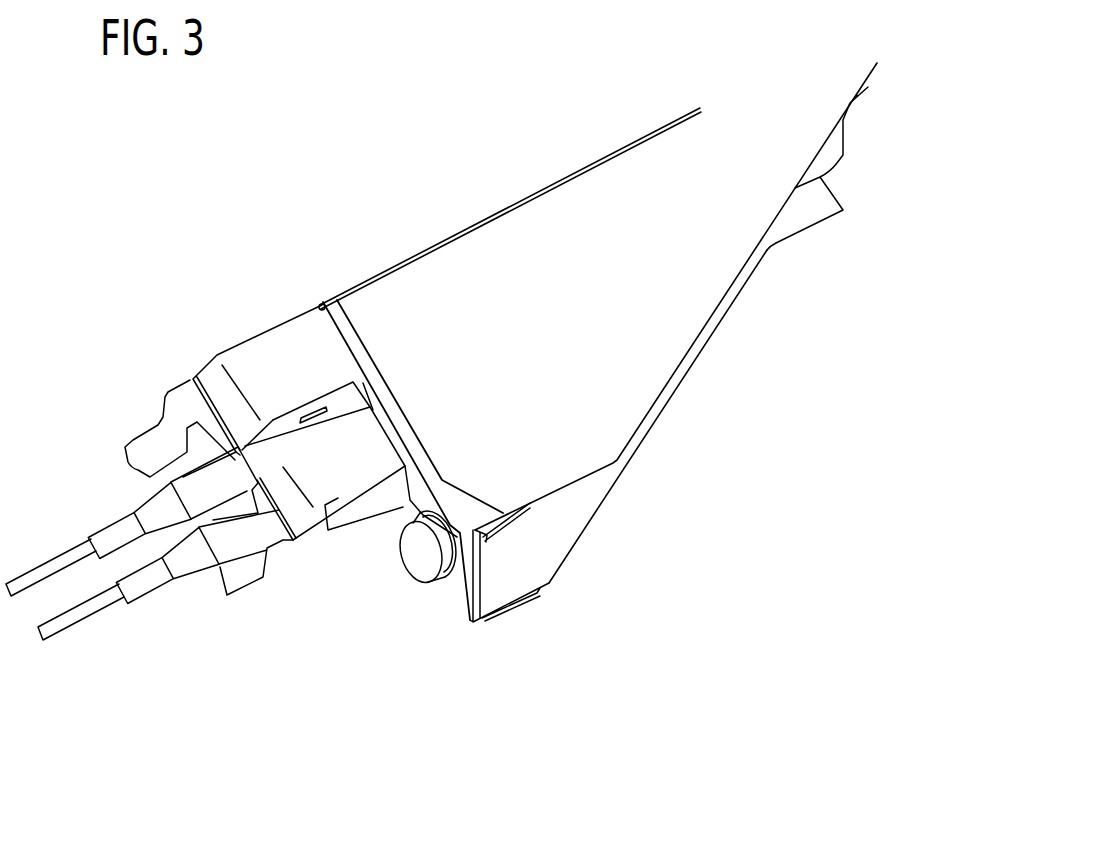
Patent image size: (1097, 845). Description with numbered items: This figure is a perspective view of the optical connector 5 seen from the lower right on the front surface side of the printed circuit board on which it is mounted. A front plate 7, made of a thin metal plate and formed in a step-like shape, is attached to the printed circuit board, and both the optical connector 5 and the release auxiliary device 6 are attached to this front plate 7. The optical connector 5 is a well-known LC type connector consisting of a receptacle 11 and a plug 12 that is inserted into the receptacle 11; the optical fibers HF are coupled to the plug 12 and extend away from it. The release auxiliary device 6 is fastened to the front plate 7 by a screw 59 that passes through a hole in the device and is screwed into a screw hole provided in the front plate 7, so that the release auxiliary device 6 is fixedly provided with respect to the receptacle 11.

The optical connector 5 is at (246, 586).
The release auxiliary device 6 is at (284, 308).
The front plate 7 is at (448, 265).
The receptacle 11 is at (365, 498).
The plug 12 is at (193, 567).
The screw 59 is at (427, 567).
The optical fibers HF is at (45, 572).